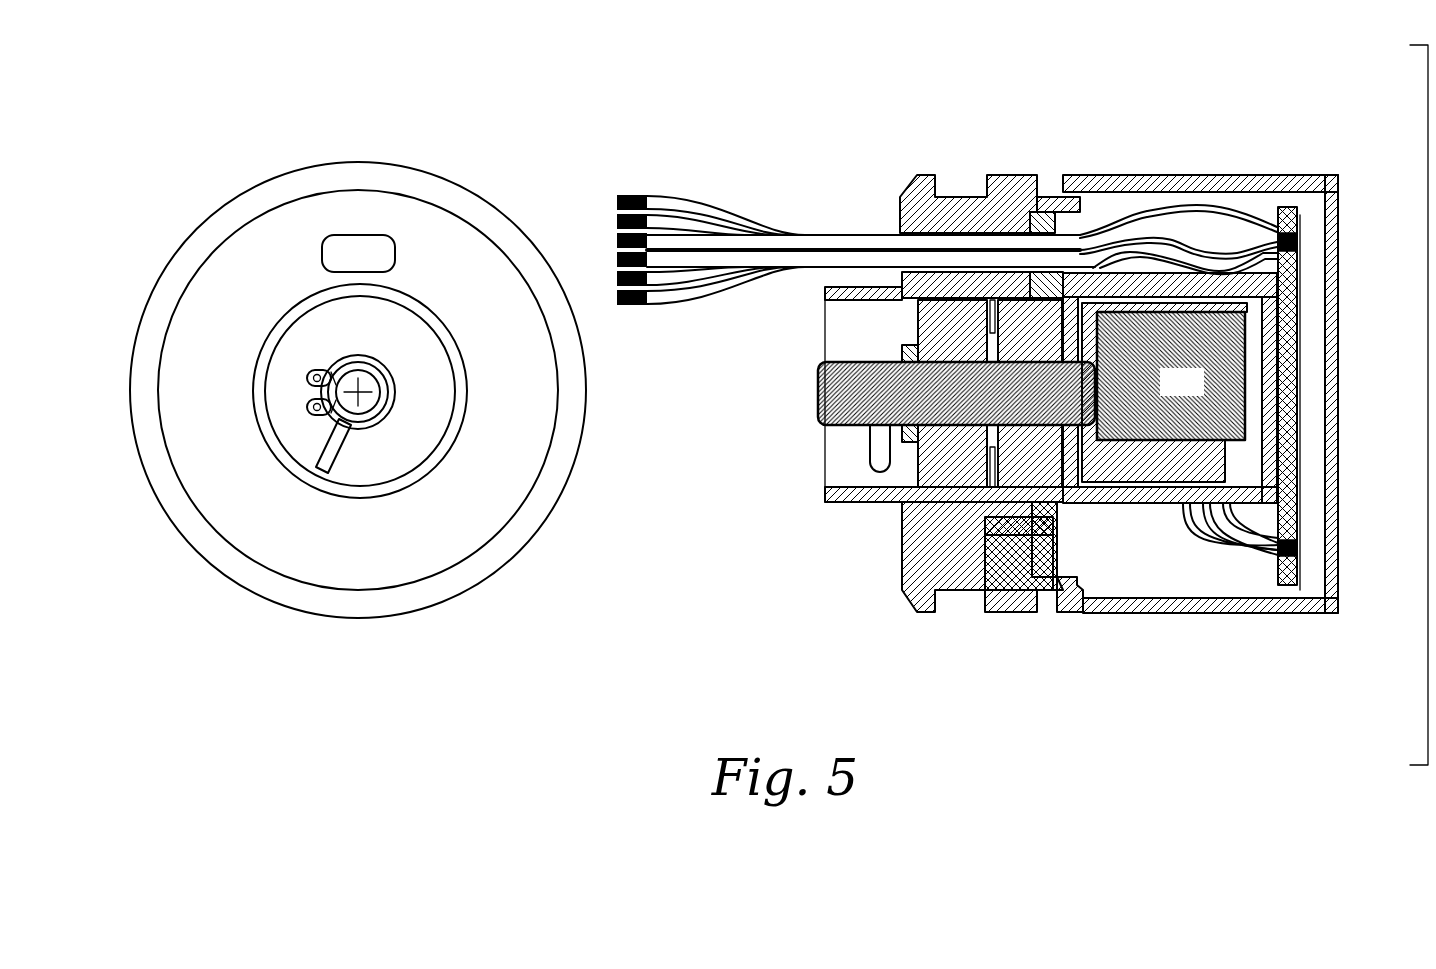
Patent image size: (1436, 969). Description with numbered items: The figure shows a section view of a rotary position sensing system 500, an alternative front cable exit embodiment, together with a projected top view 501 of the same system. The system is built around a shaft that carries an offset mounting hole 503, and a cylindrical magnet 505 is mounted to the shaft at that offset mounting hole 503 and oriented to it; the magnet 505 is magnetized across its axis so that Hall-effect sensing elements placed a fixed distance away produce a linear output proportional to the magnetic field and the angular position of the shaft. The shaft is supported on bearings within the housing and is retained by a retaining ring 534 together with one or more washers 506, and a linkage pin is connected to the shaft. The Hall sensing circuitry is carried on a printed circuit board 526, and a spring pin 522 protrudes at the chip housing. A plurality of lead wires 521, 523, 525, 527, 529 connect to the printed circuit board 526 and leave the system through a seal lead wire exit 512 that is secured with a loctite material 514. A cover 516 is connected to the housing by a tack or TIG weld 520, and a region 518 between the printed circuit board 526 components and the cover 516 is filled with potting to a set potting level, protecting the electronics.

The rotary position sensing system 500 is at (736, 130).
The projected top view 501 is at (224, 166).
The offset mounting hole 503 is at (1055, 395).
The magnet 505 is at (1164, 390).
The washer 506 is at (900, 432).
The seal lead wire exit 512 is at (900, 230).
The loctite material 514 is at (1018, 212).
The cover 516 is at (1340, 332).
The region 518 is at (1315, 513).
The tack or TIG weld 520 is at (1343, 614).
The lead wire 521 is at (1167, 213).
The spring pin 522 is at (970, 590).
The lead wire 523 is at (1208, 238).
The lead wire 525 is at (1247, 257).
The printed circuit board 526 is at (1298, 442).
The lead wire 527 is at (1185, 515).
The lead wire 529 is at (1253, 530).
The retaining ring 534 is at (413, 298).